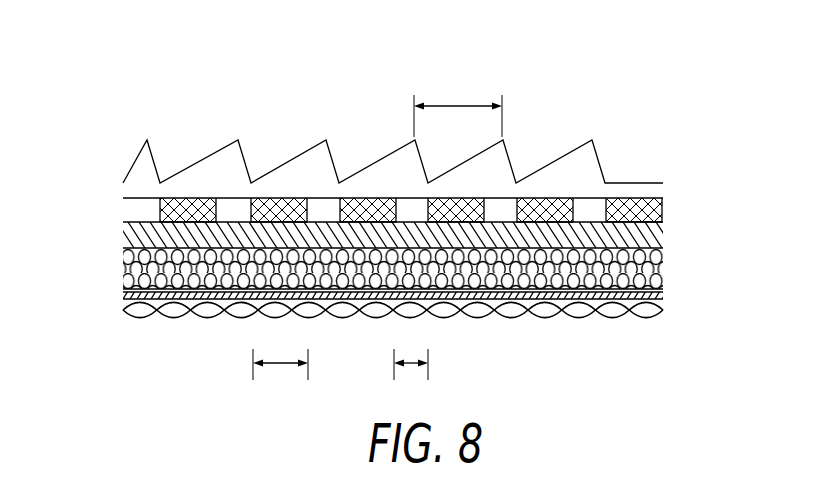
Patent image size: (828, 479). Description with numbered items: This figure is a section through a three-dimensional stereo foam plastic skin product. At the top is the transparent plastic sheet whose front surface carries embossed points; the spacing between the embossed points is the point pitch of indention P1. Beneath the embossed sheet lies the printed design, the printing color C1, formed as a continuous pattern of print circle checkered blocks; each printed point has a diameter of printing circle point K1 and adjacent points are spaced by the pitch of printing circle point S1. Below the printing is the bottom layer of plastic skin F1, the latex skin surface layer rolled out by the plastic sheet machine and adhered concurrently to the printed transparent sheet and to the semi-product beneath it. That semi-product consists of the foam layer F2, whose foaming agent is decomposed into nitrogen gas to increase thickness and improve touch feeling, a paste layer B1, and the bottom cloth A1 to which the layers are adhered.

The printing color C1 is at (280, 196).
The point pitch of indention P1 is at (458, 103).
The bottom layer of plastic skin F1 is at (665, 231).
The foam layer F2 is at (675, 255).
The paste layer B1 is at (675, 288).
The bottom cloth A1 is at (658, 306).
The diameter of printing circle point K1 is at (280, 353).
The pitch of printing circle point S1 is at (411, 353).